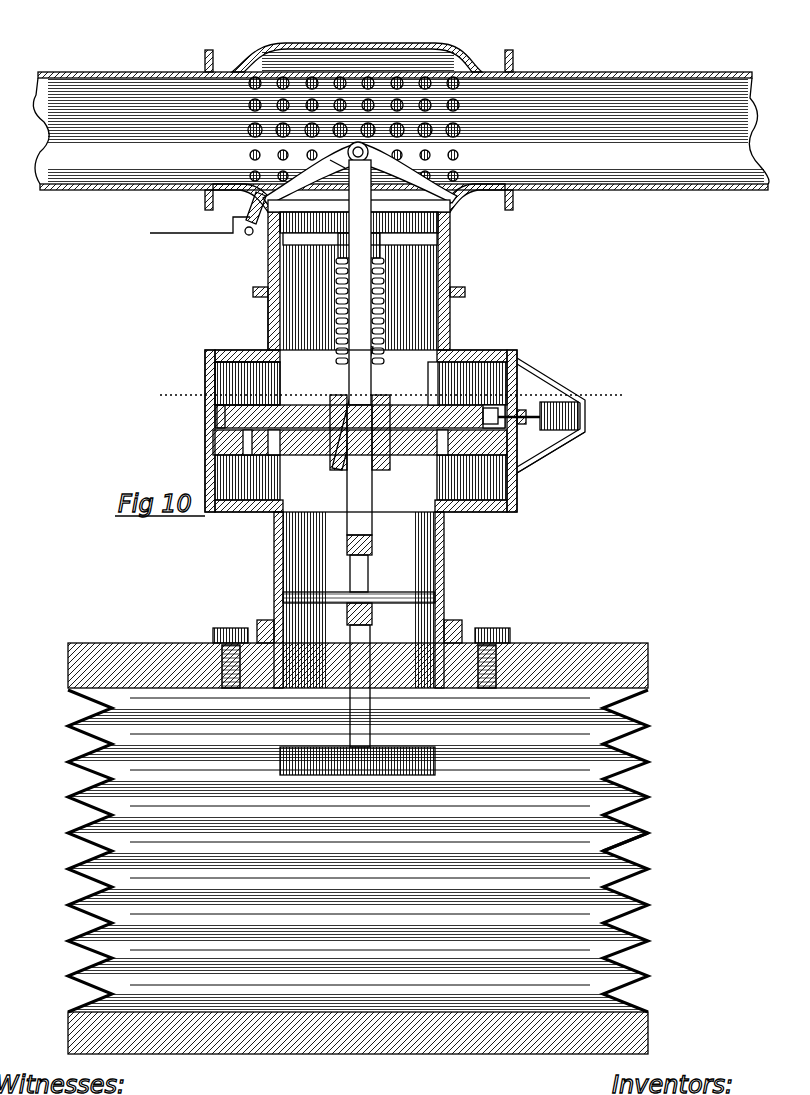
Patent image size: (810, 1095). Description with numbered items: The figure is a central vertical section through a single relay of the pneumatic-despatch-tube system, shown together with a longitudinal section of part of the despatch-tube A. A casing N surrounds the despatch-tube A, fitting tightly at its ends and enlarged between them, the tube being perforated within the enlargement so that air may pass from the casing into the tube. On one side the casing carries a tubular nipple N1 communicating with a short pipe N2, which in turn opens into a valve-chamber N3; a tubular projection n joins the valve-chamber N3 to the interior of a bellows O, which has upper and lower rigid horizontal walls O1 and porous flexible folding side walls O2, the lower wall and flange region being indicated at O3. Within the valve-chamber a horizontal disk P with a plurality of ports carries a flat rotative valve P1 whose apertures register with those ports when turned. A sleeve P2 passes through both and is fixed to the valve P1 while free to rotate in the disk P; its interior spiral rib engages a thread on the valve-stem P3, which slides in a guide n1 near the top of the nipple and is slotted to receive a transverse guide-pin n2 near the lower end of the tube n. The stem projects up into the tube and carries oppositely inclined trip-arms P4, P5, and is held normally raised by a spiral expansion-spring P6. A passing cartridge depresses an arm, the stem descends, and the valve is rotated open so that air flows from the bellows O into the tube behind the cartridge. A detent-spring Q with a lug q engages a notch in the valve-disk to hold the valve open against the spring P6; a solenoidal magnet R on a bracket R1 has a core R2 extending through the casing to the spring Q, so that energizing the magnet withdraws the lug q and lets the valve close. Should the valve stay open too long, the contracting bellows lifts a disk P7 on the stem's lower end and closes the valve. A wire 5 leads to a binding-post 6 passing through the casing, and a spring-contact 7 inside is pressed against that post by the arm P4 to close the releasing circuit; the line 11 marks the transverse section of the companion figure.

The despatch-tube A is at (636, 72).
The casing N is at (400, 43).
The tubular nipple N1 is at (268, 262).
The short pipe N2 is at (268, 310).
The valve-chamber N3 is at (233, 368).
The tubular projection n is at (446, 566).
The guide n1 is at (393, 230).
The transverse guide-pin n2 is at (380, 617).
The horizontal disk P is at (250, 460).
The flat rotative valve P1 is at (430, 405).
The sleeve P2 is at (380, 256).
The valve-stem P3 is at (382, 315).
The trip-arm P4 is at (330, 160).
The trip-arm P5 is at (405, 176).
The spiral expansion-spring P6 is at (382, 290).
The disk P7 is at (357, 757).
The spring Q is at (500, 408).
The detent lug q is at (512, 428).
The solenoidal magnet R is at (578, 415).
The bracket R1 is at (562, 455).
The core R2 is at (545, 386).
The bellows O is at (580, 772).
The horizontal rigid wall O1 is at (590, 645).
The flexible folding side wall O2 is at (632, 858).
The lower bellows flange O3 is at (432, 1054).
The wire 5 is at (200, 223).
The binding-post 6 is at (246, 235).
The spring-contact 7 is at (255, 200).
The section line 11 is at (395, 392).